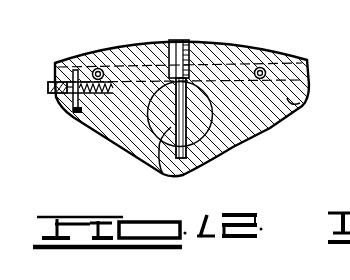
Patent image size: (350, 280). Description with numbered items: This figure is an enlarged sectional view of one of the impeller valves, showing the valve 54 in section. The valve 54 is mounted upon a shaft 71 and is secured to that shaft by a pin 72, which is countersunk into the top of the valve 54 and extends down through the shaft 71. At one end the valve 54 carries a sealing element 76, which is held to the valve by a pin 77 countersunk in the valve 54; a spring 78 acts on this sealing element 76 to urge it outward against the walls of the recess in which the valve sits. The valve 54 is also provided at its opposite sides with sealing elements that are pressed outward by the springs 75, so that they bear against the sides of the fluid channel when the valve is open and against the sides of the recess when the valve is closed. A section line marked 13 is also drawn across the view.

The valve 54 is at (304, 100).
The shaft 71 is at (162, 161).
The pin 72 is at (177, 166).
The springs 75 is at (95, 68).
The sealing element 76 is at (50, 90).
The pin 77 is at (74, 113).
The spring 78 is at (98, 97).
The section line 13- 13 is at (285, 31).